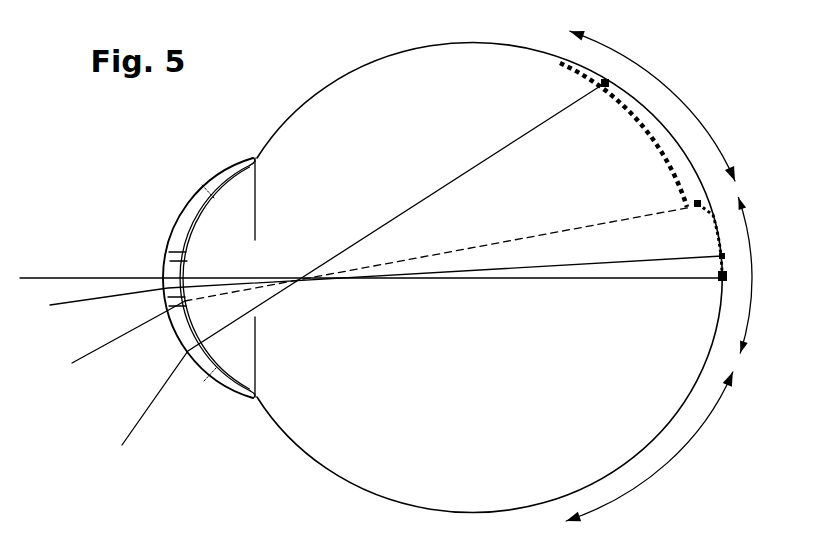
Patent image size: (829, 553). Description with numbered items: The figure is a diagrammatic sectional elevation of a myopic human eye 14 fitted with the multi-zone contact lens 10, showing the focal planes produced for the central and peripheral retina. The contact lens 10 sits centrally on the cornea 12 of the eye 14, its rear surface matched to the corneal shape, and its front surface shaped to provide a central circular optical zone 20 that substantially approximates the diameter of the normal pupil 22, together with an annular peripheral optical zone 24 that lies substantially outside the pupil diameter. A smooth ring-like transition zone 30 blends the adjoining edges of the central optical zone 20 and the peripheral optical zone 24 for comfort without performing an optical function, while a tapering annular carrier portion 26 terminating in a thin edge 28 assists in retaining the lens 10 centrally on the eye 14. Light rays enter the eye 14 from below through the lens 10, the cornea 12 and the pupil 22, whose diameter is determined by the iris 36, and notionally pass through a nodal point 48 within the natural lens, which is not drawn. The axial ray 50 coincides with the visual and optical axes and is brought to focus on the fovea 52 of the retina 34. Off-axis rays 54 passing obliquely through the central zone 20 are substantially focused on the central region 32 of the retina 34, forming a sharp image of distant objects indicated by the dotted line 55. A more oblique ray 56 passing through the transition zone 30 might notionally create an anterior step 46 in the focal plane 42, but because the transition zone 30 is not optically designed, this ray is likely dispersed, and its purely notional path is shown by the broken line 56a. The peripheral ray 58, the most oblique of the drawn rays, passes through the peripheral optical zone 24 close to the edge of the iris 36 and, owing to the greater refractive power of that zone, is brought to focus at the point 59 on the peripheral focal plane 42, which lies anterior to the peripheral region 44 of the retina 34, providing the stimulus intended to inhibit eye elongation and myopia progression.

The contact lens 10 is at (194, 176).
The cornea 12 is at (200, 267).
The eye 14 is at (332, 49).
The central optical zone 20 is at (167, 267).
The pupil 22 is at (263, 261).
The peripheral optical zone 24 is at (190, 208).
The carrier portion 26 is at (222, 173).
The edge 28 is at (253, 156).
The transition zone 30 is at (167, 257).
The central region of the retina 32 is at (753, 292).
The retina 34 is at (637, 455).
The iris 36 is at (257, 346).
The focal plane 42 is at (660, 165).
The peripheral region of the retina 44 is at (673, 80).
The anterior step 46 is at (700, 204).
The nodal point 48 is at (302, 282).
The axial ray 50 is at (57, 277).
The fovea 52 is at (719, 281).
The off-axis rays 54 is at (86, 302).
The dotted line 55 is at (717, 232).
The oblique off-axis ray 56 is at (88, 355).
The broken line 56a is at (512, 240).
The peripheral ray 58 is at (118, 440).
The focus point 59 is at (602, 85).